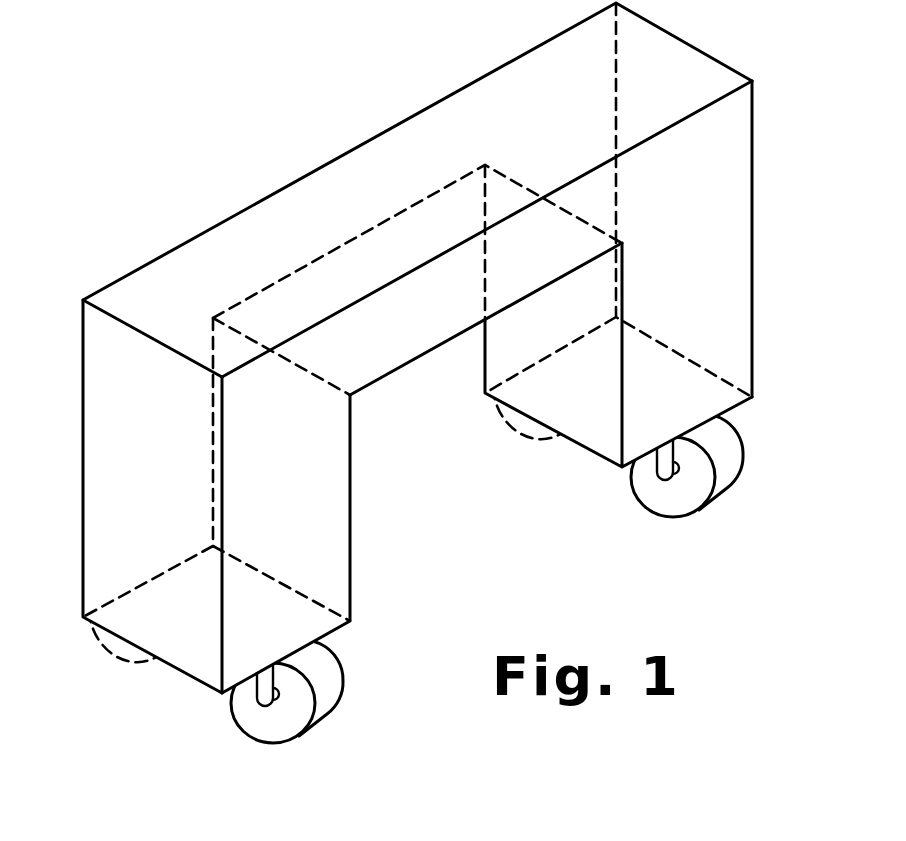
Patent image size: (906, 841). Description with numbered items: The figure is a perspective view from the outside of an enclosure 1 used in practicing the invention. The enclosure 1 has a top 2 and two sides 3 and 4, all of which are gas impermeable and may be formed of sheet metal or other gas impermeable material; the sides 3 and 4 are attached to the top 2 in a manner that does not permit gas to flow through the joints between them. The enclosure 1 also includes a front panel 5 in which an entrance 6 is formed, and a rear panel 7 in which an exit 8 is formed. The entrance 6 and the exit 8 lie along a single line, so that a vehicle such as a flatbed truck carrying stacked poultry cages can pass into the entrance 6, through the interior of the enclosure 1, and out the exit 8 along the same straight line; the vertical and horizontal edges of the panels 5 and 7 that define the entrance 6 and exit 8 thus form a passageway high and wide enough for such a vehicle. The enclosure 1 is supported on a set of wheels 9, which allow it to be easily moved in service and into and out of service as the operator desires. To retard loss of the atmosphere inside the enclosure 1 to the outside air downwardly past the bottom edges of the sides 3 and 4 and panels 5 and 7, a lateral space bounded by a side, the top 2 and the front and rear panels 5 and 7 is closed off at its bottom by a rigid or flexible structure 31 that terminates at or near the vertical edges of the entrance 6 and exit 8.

The enclosure 1 is at (765, 90).
The top 2 is at (559, 131).
The side 3 is at (638, 279).
The side 4 is at (136, 446).
The front panel 5 is at (458, 302).
The entrance 6 is at (464, 551).
The rear panel 7 is at (293, 230).
The exit 8 is at (403, 416).
The wheels 9 is at (113, 653).
The rigid or flexible structure 31 is at (643, 422).